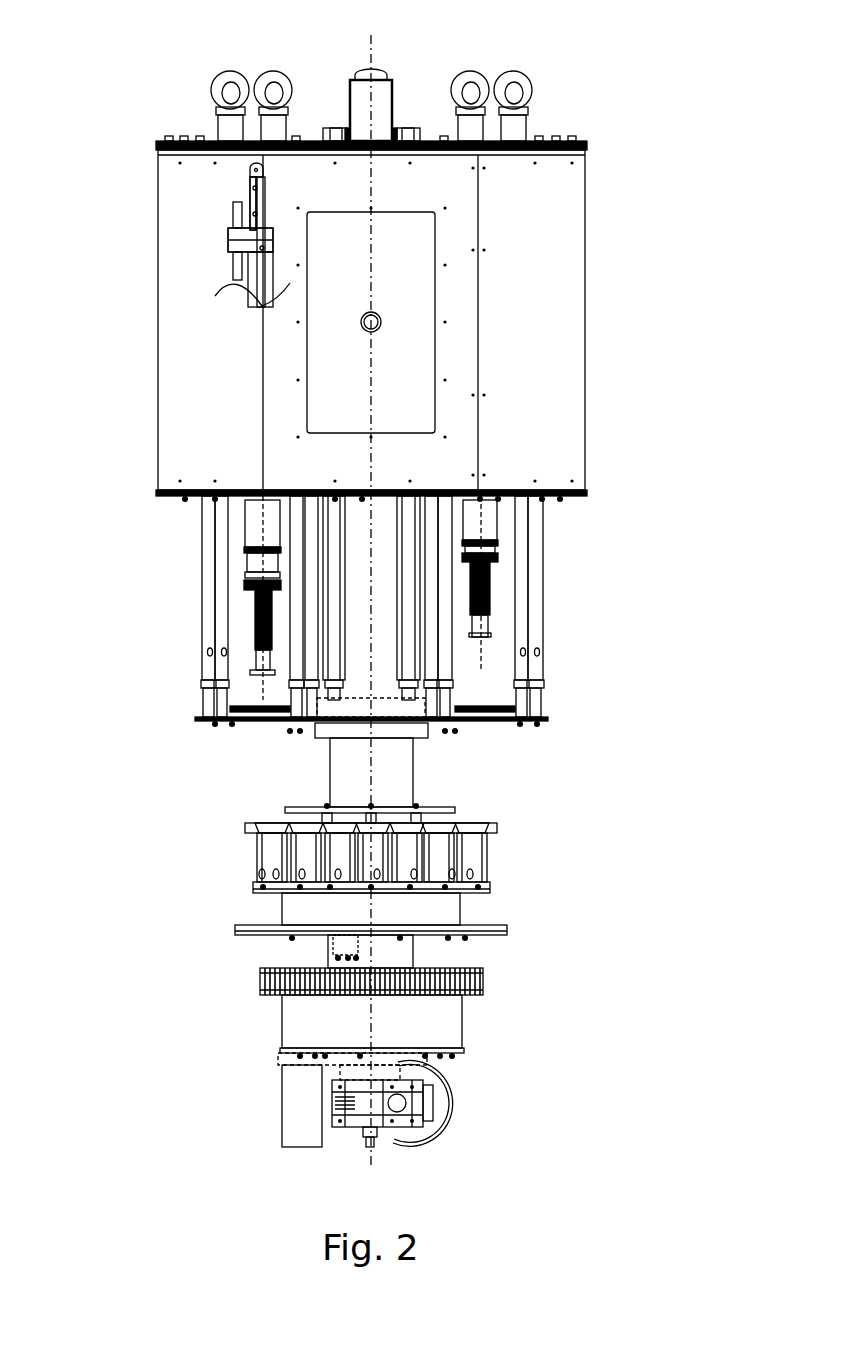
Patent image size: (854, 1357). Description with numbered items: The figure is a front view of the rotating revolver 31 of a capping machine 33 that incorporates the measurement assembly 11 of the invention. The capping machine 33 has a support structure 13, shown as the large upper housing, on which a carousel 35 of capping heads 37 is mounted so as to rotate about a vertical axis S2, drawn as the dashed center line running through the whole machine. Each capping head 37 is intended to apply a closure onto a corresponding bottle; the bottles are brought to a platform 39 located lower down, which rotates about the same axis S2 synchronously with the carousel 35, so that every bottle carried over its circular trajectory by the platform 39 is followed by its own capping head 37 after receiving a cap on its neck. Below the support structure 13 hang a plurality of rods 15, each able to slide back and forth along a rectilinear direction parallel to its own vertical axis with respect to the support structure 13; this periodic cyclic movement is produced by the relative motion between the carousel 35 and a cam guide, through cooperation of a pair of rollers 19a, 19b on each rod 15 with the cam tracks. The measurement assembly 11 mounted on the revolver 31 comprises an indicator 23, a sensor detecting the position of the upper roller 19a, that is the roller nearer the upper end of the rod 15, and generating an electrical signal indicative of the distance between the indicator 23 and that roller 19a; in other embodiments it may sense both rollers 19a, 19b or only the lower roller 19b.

The vertical axis S2 is at (370, 585).
The measurement assembly 11 is at (180, 267).
The support structure 13 is at (588, 253).
The rod 15 is at (262, 300).
The upper roller 19a is at (268, 226).
The lower roller 19b is at (274, 228).
The indicator 23 is at (250, 168).
The revolver 31 is at (357, 617).
The capping machine 33 is at (142, 1077).
The carousel 35 is at (545, 549).
The capping head 37 is at (500, 626).
The platform 39 is at (496, 848).